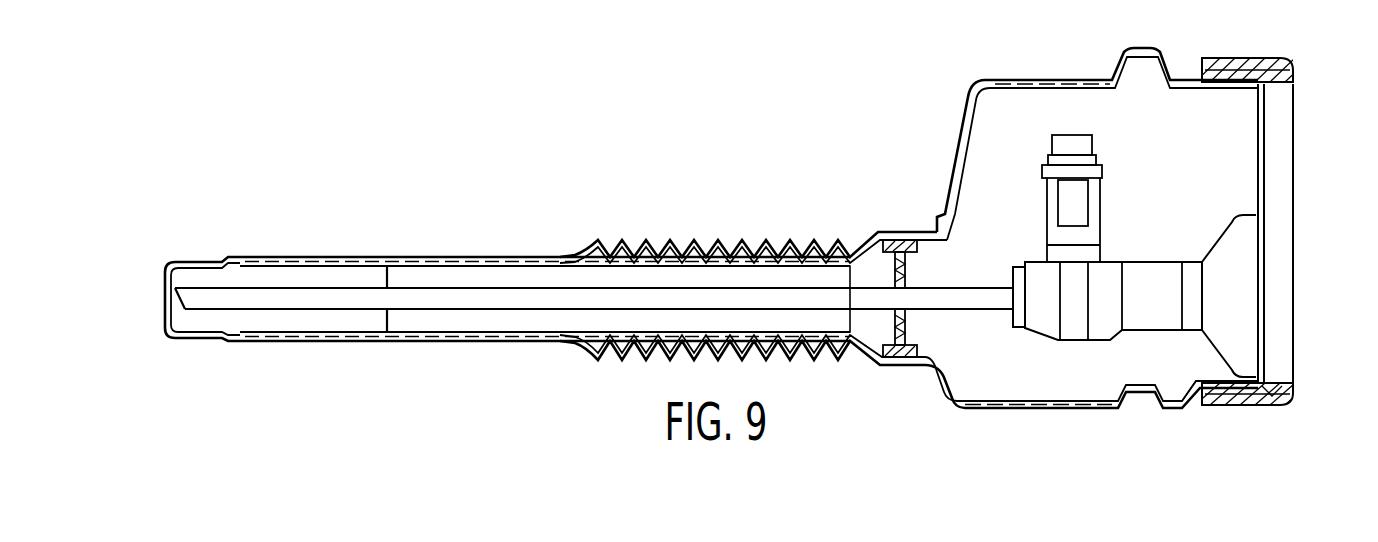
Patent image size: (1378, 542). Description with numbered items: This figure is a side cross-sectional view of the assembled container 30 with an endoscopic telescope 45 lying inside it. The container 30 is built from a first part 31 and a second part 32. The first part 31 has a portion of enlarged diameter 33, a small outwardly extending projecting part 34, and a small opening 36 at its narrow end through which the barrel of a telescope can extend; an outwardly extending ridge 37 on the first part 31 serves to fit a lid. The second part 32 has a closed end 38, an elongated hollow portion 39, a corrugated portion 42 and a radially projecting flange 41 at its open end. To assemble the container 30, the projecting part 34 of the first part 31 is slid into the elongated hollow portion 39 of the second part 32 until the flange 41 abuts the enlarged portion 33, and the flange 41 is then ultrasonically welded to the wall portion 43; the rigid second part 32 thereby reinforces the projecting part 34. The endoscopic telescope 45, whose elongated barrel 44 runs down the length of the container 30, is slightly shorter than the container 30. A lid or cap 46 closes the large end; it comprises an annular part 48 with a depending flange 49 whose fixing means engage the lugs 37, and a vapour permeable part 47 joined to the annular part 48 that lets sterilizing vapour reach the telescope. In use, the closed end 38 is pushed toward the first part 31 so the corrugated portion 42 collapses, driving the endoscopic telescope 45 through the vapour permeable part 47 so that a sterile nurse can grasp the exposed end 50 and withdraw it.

The container 30 is at (733, 206).
The first part 31 is at (1045, 77).
The second part 32 is at (300, 343).
The portion of enlarged diameter 33 is at (984, 79).
The outwardly extending projecting part 34 is at (368, 264).
The small opening 36 is at (400, 284).
The outwardly extending ridge 37 is at (1268, 401).
The closed end 38 is at (165, 305).
The elongated hollow portion 39 is at (472, 342).
The flange 41 is at (933, 371).
The corrugated portion 42 is at (680, 353).
The wall portion 43 is at (940, 386).
The elongated barrel 44 is at (818, 298).
The endoscopic telescope 45 is at (1050, 343).
The lid or cap 46 is at (1296, 78).
The vapour permeable part 47 is at (1297, 237).
The annular part 48 is at (1291, 393).
The flange 49 is at (1251, 401).
The end of the endoscopic telescope 50 is at (1222, 248).